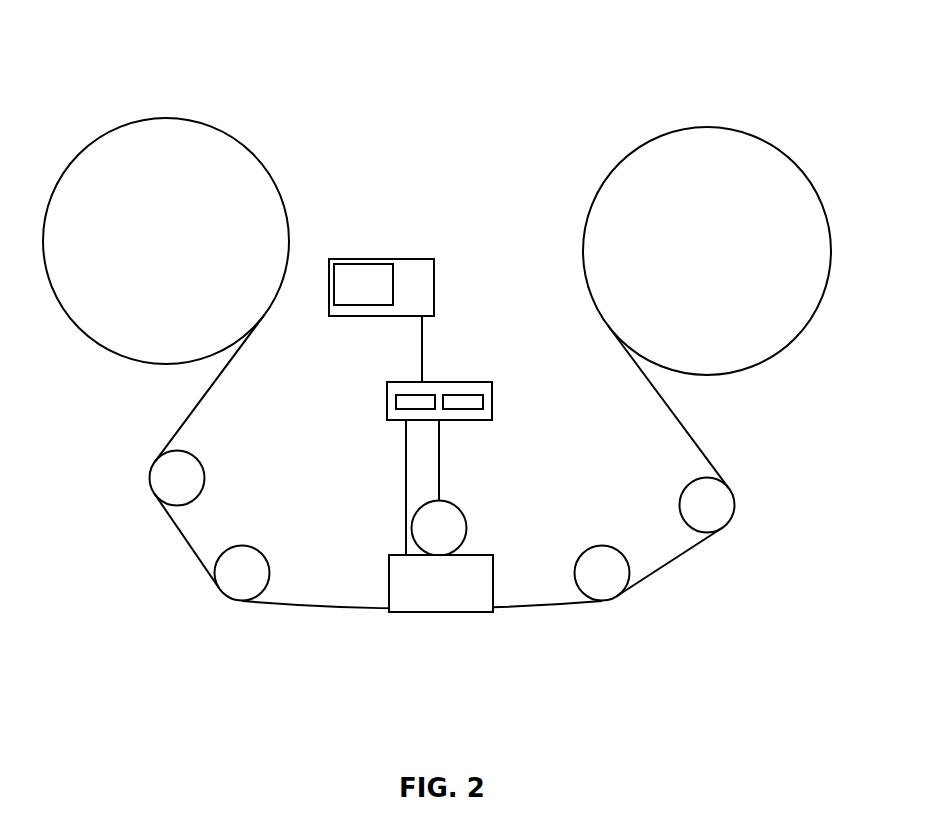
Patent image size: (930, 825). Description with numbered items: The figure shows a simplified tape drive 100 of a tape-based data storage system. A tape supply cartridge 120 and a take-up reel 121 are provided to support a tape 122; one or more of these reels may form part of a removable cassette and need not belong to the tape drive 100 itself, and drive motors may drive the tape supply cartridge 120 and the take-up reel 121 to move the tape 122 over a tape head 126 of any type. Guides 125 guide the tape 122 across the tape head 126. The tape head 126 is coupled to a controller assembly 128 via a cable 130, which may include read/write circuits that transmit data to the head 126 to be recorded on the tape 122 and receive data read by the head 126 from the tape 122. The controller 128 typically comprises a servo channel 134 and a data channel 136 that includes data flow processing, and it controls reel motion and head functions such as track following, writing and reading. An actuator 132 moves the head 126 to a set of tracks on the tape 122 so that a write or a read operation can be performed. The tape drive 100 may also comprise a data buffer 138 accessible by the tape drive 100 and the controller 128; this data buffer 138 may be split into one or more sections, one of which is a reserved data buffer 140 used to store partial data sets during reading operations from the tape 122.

The tape drive 100 is at (472, 98).
The tape supply cartridge 120 is at (278, 190).
The take-up reel 121 is at (757, 367).
The tape 122 is at (318, 607).
The guides 125 is at (242, 545).
The tape head 126 is at (495, 583).
The controller assembly 128 is at (438, 382).
The cable 130 is at (405, 527).
The actuator 132 is at (460, 507).
The servo channel 134 is at (473, 394).
The data channel 136 is at (407, 394).
The data buffer 138 is at (388, 258).
The reserved data buffer 140 is at (363, 284).